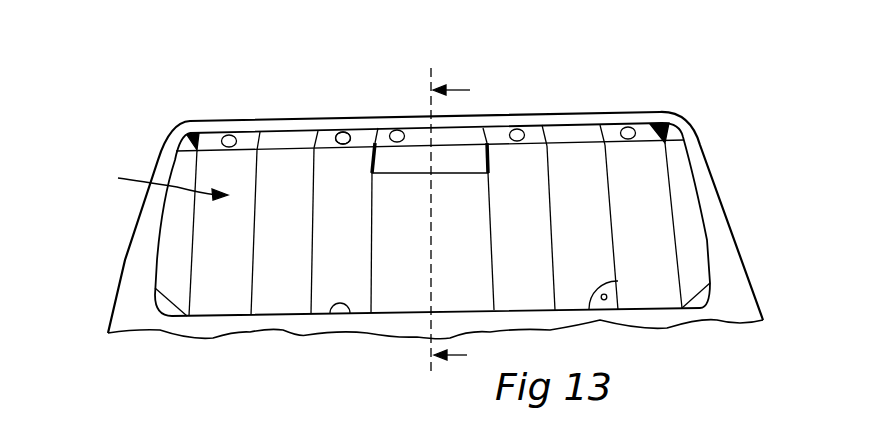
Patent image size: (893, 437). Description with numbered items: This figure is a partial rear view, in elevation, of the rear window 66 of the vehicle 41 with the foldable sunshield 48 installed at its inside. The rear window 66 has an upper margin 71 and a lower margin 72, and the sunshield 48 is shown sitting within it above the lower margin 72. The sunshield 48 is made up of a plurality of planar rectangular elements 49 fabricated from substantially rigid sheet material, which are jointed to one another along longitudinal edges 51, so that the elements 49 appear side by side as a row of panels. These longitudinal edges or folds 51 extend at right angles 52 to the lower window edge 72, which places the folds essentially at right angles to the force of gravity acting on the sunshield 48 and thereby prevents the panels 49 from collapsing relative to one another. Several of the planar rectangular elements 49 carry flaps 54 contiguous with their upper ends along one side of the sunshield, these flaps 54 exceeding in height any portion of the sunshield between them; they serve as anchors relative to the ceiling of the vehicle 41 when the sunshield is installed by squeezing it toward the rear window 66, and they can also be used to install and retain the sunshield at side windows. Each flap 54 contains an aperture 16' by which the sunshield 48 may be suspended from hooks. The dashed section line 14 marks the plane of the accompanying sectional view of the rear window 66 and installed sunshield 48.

The vehicle 41 is at (248, 337).
The rear window 66 is at (166, 272).
The flaps 54 is at (313, 131).
The apertures 16' is at (353, 111).
The upper margin 71 is at (398, 133).
The longitudinal edges 51 is at (313, 237).
The planar rectangular elements 49 is at (237, 246).
The right angles 52 is at (590, 297).
The lower margin 72 is at (332, 313).
The foldable sunshield 48 is at (158, 187).
The section line 14- 14 is at (468, 220).